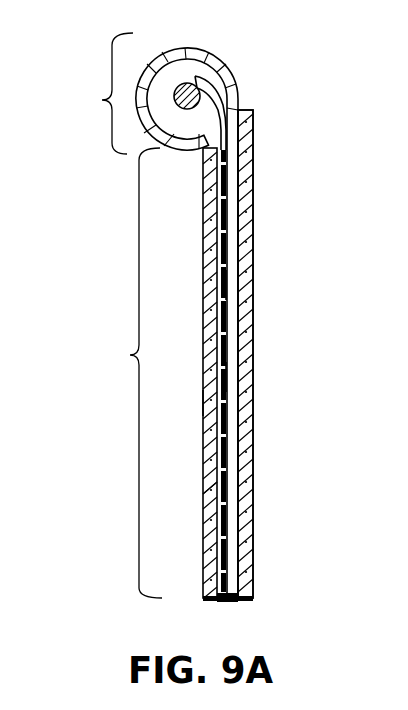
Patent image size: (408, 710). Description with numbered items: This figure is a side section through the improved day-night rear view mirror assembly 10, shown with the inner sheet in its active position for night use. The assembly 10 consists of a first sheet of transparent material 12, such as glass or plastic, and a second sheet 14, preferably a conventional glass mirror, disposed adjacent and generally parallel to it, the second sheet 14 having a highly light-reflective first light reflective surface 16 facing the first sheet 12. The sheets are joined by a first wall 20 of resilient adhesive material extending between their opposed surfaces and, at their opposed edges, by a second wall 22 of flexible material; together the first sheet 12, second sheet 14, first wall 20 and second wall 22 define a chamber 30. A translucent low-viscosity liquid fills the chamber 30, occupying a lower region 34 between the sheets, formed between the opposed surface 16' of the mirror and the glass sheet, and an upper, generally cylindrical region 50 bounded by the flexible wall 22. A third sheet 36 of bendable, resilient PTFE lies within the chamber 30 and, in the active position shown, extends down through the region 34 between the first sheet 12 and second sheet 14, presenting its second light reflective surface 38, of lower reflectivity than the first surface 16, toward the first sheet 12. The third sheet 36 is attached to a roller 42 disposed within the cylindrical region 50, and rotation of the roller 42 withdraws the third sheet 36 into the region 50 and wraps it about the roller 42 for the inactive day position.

The day-night rear view mirror assembly 10 is at (267, 219).
The first sheet of transparent material 12 is at (251, 513).
The second sheet 14 is at (212, 486).
The first light reflective surface 16 is at (183, 373).
The opposed surface of the mirror sheet 16' is at (177, 403).
The first wall 20 is at (233, 597).
The second wall 22 is at (225, 56).
The chamber 30 is at (186, 62).
The region between the first and second sheets 34 is at (128, 373).
The third sheet 36 is at (232, 285).
The second light reflective surface 38 is at (233, 378).
The roller 42 is at (177, 92).
The upper cylindrical region 50 is at (98, 93).